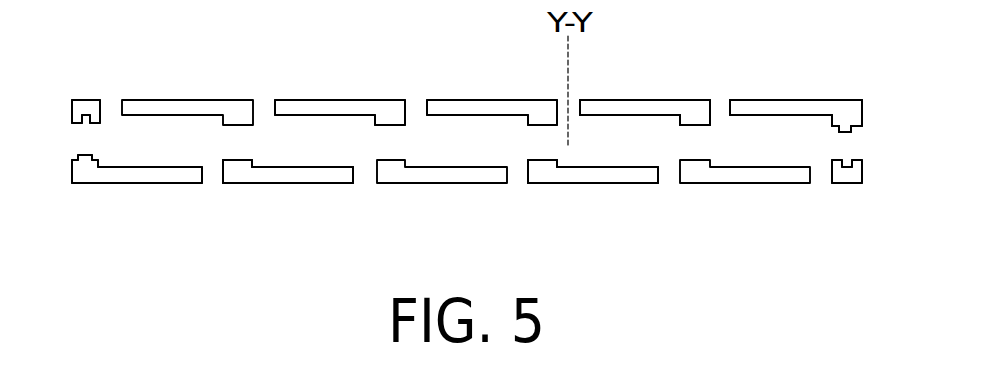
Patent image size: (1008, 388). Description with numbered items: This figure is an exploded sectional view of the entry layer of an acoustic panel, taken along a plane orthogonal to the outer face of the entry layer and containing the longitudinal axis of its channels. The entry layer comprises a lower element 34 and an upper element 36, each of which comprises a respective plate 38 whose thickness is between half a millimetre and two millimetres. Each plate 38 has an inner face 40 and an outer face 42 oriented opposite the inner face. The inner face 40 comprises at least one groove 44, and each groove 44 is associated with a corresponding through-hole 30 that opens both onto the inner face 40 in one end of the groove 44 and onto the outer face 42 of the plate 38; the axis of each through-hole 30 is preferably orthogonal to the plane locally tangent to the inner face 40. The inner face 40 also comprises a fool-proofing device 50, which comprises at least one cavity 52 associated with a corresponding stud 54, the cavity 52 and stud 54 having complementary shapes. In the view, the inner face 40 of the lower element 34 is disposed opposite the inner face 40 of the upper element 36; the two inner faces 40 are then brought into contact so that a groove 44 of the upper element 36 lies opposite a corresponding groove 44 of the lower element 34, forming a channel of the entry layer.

The through-hole 30 is at (572, 109).
The lower element 34 is at (768, 209).
The upper element 36 is at (835, 86).
The plate 38 is at (357, 92).
The inner face 40 is at (695, 125).
The outer face 42 is at (784, 100).
The groove 44 is at (294, 156).
The fool-proofing device 50 is at (60, 146).
The cavity 52 is at (86, 116).
The stud 54 is at (853, 131).